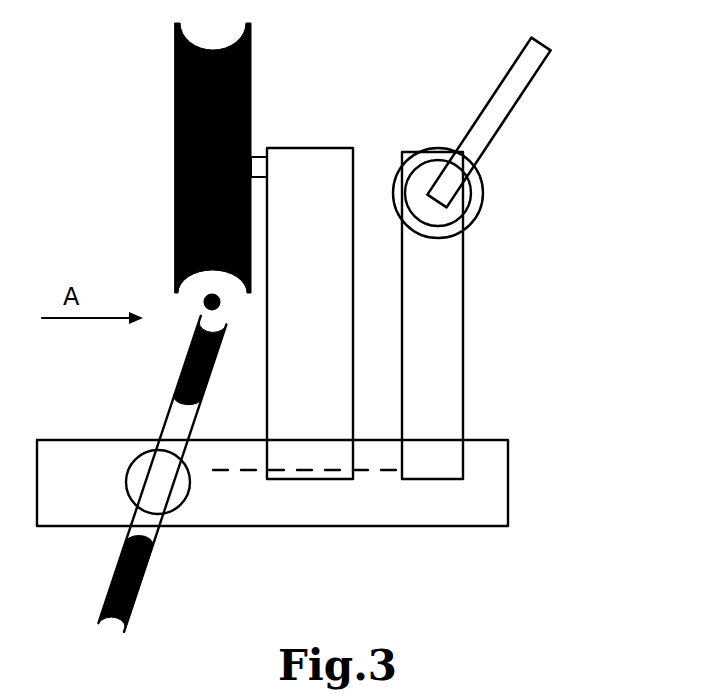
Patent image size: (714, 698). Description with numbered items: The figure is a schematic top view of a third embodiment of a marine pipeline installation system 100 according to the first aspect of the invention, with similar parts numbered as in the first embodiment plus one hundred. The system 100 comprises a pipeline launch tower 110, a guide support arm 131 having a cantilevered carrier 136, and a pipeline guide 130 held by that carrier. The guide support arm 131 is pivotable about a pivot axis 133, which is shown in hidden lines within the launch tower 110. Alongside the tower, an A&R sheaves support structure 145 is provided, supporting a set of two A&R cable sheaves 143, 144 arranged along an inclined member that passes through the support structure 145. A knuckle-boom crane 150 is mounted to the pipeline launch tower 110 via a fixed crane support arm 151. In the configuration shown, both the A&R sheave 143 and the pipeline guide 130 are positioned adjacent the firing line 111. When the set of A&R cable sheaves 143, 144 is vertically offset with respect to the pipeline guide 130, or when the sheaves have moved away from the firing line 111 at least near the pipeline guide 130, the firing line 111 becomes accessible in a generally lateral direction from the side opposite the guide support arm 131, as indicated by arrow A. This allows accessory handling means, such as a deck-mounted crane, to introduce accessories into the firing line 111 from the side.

The marine pipeline installation system 100 is at (538, 282).
The pipeline launch tower 110 is at (272, 483).
The firing line 111 is at (204, 303).
The pipeline guide 130 is at (250, 82).
The guide support arm 131 is at (310, 313).
The pivot axis 133 is at (244, 471).
The cantilevered carrier 136 is at (257, 157).
The A&R cable sheave 143 is at (182, 358).
The A&R cable sheave 144 is at (145, 582).
The A&R sheaves support structure 145 is at (135, 478).
The knuckle-boom crane 150 is at (495, 110).
The crane support arm 151 is at (432, 315).